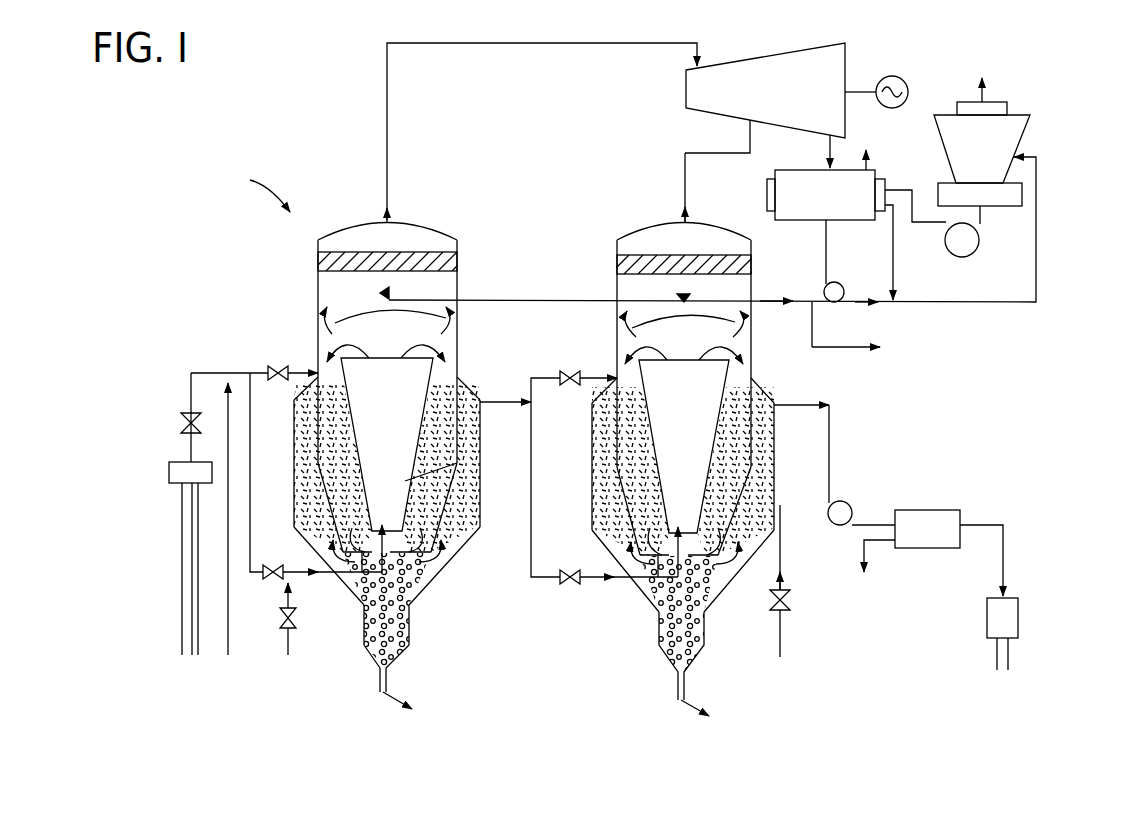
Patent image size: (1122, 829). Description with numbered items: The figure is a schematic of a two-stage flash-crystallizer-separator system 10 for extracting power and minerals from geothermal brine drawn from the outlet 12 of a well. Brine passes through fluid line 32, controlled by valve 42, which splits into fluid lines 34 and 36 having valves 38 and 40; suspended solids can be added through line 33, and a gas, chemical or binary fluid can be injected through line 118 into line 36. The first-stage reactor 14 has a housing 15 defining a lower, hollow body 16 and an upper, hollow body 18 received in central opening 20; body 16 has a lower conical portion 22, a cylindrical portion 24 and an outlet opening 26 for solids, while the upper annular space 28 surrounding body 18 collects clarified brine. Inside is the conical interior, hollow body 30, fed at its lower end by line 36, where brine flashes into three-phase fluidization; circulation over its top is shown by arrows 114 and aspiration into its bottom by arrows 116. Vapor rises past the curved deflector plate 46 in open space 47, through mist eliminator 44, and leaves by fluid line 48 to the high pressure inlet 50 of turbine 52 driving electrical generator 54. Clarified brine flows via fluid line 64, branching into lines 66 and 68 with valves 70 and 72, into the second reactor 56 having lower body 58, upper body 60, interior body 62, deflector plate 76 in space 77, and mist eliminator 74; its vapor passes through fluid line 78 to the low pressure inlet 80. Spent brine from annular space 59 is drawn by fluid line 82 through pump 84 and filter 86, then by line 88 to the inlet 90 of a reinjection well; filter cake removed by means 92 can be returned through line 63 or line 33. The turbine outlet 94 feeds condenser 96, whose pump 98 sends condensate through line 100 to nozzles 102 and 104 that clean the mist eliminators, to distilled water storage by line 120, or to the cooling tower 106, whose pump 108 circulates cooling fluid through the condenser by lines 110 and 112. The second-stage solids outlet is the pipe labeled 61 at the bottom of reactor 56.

The system 10 is at (255, 188).
The outlet 12 is at (190, 462).
The reactor 14 is at (428, 608).
The housing 15 is at (466, 550).
The lower, hollow body 16 is at (481, 497).
The upper, hollow body 18 is at (462, 328).
The central opening 20 is at (460, 379).
The lower conical portion 22 is at (452, 568).
The cylindrical portion 24 is at (413, 640).
The outlet opening 26 is at (379, 671).
The upper, annular space 28 is at (479, 414).
The interior, hollow body 30 is at (445, 466).
The fluid line 32 is at (222, 373).
The line 33 is at (228, 637).
The fluid line 34 is at (270, 366).
The fluid line 36 is at (251, 520).
The valve 38 is at (277, 382).
The valve 40 is at (276, 565).
The valve 42 is at (184, 418).
The mist eliminator 44 is at (452, 262).
The curved deflector plate 46 is at (345, 322).
The open space 47 is at (395, 341).
The fluid line 48 is at (390, 130).
The high pressure inlet 50 is at (704, 63).
The turbine 52 is at (820, 27).
The electrical generator 54 is at (908, 82).
The reactor 56 is at (734, 604).
The lower, hollow body 58 is at (775, 486).
The annular, closed space 59 is at (775, 437).
The upper, hollow body 60 is at (757, 350).
The outlet 61 is at (677, 686).
The interior, open end body 62 is at (725, 398).
The line 63 is at (782, 584).
The fluid line 64 is at (512, 400).
The fluid line 66 is at (538, 376).
The fluid line 68 is at (532, 496).
The valve 70 is at (572, 370).
The valve 72 is at (572, 585).
The mist eliminator 74 is at (632, 258).
The curved deflector plate 76 is at (722, 322).
The space 77 is at (697, 351).
The fluid line 78 is at (683, 185).
The low pressure inlet 80 is at (748, 128).
The fluid line 82 is at (831, 445).
The pump 84 is at (865, 470).
The filter 86 is at (927, 510).
The fluid line 88 is at (1003, 518).
The inlet 90 is at (1012, 598).
The means for removing the filter cake 92 is at (880, 548).
The fluid outlet 94 is at (838, 137).
The condenser 96 is at (795, 185).
The pump 98 is at (858, 247).
The fluid line 100 is at (815, 307).
The nozzle 102 is at (389, 287).
The nozzle 104 is at (677, 295).
The cooling tower 106 is at (1006, 133).
The pump 108 is at (972, 256).
The line 110 is at (908, 190).
The line 112 is at (990, 304).
The arrows 114 is at (326, 348).
The arrows 116 is at (346, 580).
The line 118 is at (284, 607).
The line 120 is at (846, 350).